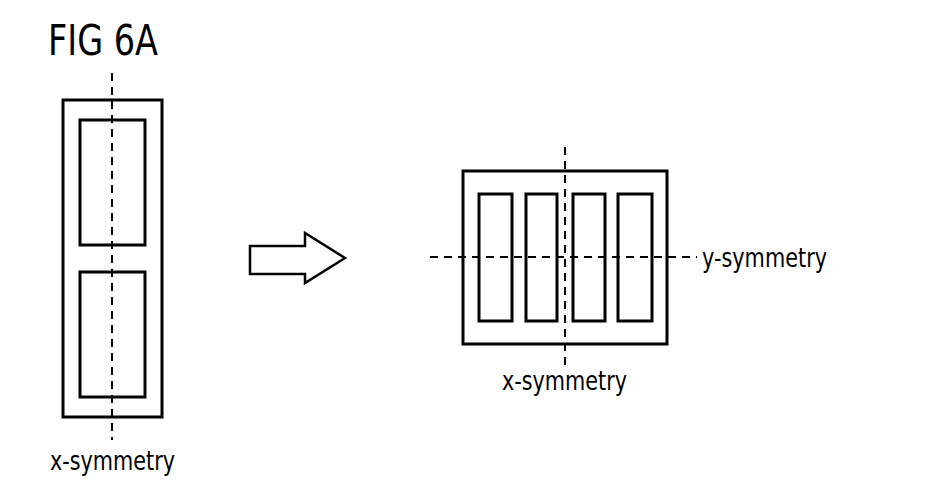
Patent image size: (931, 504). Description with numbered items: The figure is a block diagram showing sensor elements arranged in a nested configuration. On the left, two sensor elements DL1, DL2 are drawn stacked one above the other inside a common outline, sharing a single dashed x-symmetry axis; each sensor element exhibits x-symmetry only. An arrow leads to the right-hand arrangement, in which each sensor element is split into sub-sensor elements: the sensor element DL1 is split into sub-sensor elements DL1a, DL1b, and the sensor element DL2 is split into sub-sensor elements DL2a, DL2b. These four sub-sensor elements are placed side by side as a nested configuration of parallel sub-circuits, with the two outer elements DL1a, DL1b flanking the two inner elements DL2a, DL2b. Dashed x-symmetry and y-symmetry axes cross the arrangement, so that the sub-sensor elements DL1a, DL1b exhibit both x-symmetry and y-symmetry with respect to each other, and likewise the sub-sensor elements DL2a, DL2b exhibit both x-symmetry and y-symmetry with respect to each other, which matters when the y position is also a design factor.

The sensor element DL1 is at (130, 178).
The sensor element DL2 is at (130, 338).
The sub-sensor element DL1a is at (492, 217).
The sub-sensor element DL1b is at (640, 218).
The sub-sensor element DL2a is at (542, 208).
The sub-sensor element DL2b is at (588, 208).